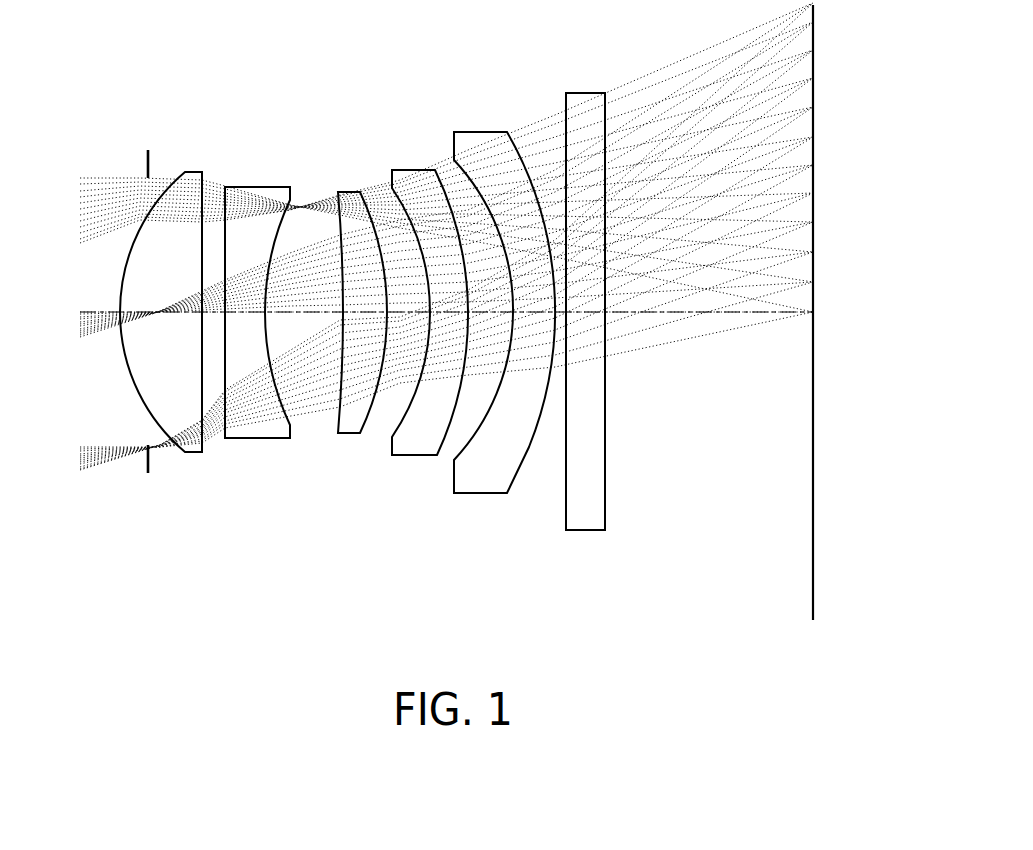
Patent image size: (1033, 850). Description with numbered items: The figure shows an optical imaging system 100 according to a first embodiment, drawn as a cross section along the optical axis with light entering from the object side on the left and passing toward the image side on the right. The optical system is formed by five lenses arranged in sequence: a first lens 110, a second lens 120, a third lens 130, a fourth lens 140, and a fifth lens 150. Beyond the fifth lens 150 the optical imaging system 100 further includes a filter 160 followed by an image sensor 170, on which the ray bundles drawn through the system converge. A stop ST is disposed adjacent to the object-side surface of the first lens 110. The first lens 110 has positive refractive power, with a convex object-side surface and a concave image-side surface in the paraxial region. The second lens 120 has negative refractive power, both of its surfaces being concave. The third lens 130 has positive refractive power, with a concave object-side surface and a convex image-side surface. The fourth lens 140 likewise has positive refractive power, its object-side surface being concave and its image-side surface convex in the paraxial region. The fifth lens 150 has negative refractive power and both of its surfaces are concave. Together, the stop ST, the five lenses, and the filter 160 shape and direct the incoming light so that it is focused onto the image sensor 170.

The optical imaging system 100 is at (312, 87).
The stop ST is at (148, 474).
The first lens 110 is at (183, 453).
The second lens 120 is at (250, 440).
The third lens 130 is at (348, 436).
The fourth lens 140 is at (412, 457).
The fifth lens 150 is at (480, 494).
The filter 160 is at (585, 531).
The image sensor 170 is at (813, 582).